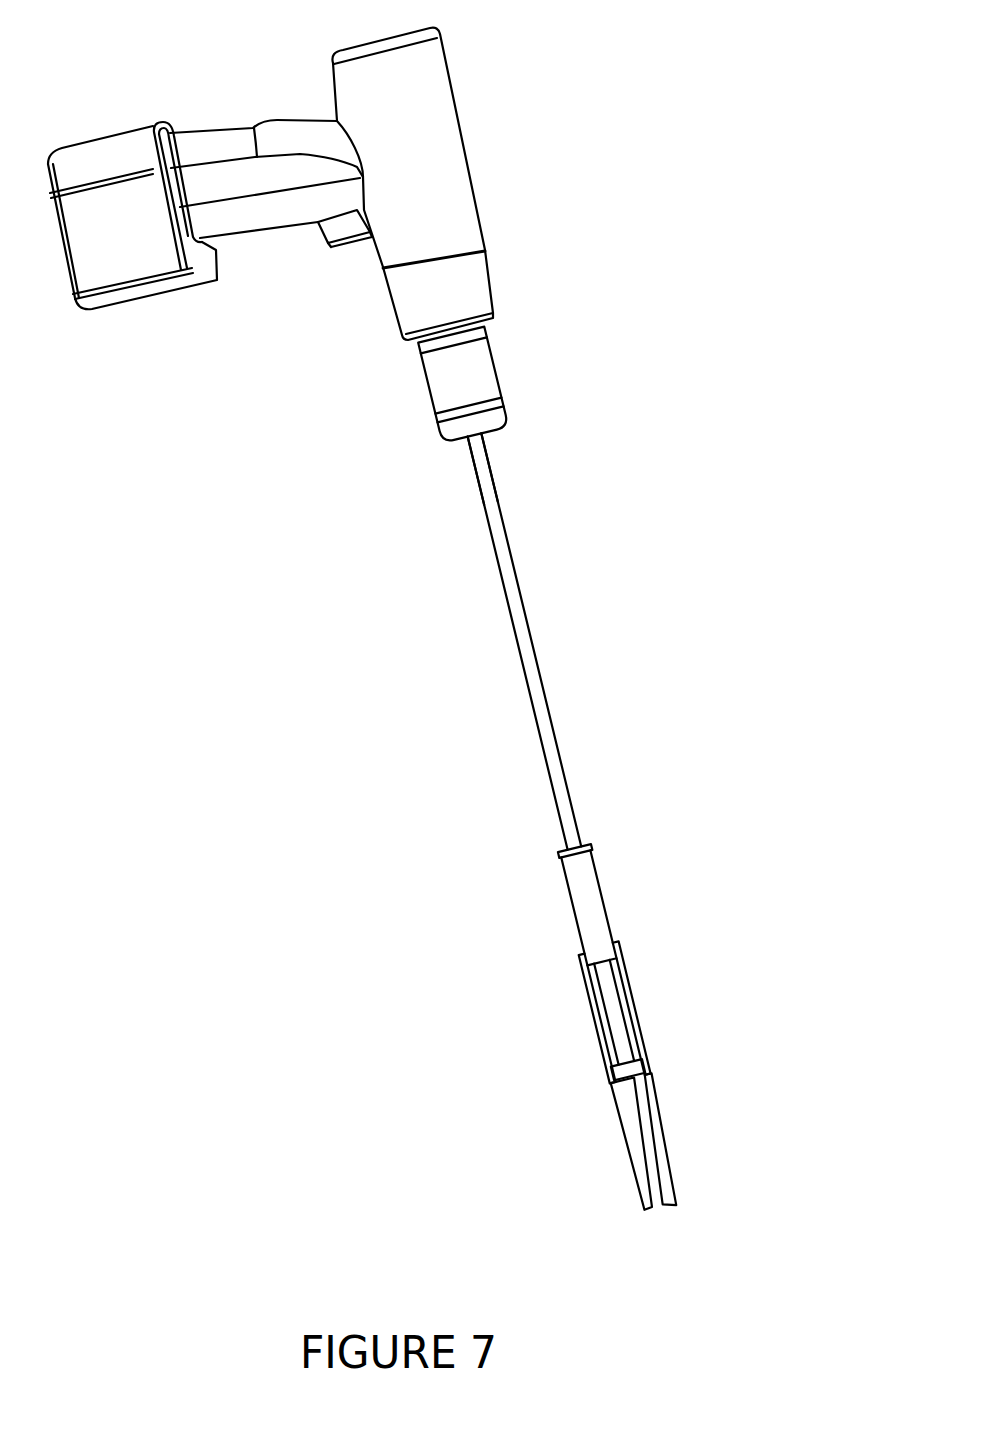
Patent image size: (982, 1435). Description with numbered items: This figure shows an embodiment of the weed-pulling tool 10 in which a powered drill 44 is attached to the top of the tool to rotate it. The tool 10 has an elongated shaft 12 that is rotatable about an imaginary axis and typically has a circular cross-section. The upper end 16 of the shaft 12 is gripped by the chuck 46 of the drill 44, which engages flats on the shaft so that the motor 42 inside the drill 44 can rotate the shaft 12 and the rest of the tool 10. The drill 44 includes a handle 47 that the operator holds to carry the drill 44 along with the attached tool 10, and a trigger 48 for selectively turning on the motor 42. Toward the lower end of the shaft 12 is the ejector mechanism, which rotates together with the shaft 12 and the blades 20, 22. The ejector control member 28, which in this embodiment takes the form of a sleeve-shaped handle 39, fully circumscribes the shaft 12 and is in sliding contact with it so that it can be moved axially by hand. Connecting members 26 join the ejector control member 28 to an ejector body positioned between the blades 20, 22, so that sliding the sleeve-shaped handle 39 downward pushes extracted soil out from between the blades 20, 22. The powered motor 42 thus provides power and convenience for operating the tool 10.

The tool 10 is at (712, 650).
The shaft 12 is at (510, 596).
The upper end 16 is at (482, 450).
The blade 20 is at (628, 1112).
The blade 22 is at (650, 1130).
The connecting members 26 is at (597, 1037).
The ejector control member 28 is at (690, 818).
The sleeve-shaped handle 39 is at (598, 938).
The motor 42 is at (432, 157).
The powered drill 44 is at (323, 447).
The chuck 46 is at (473, 373).
The handle 47 is at (240, 180).
The trigger 48 is at (338, 223).